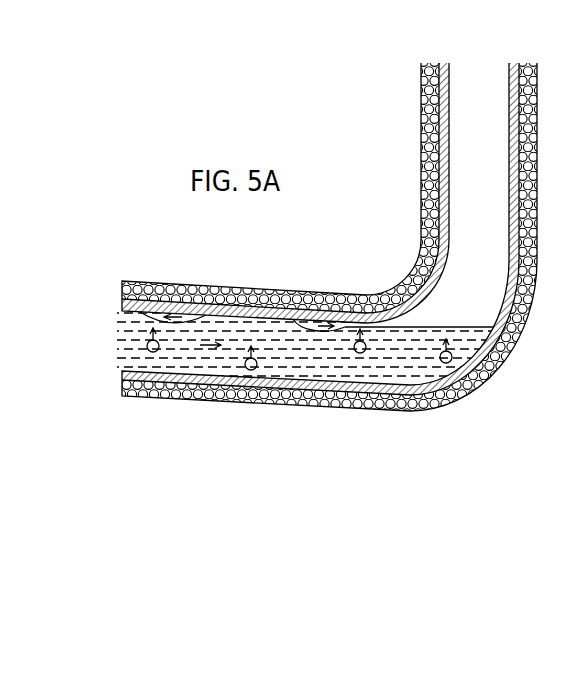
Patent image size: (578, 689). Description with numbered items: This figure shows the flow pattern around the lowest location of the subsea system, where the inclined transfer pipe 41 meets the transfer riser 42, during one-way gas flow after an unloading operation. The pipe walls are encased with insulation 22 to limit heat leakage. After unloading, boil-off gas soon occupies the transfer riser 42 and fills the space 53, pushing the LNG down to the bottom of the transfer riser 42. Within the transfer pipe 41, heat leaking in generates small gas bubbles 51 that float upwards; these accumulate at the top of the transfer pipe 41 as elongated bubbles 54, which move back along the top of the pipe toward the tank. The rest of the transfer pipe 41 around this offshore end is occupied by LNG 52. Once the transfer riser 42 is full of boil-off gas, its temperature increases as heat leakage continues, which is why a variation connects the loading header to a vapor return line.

The insulation 22 is at (430, 116).
The transfer pipe 41 is at (280, 311).
The transfer riser 42 is at (511, 100).
The small gas bubbles 51 is at (449, 352).
The LNG 52 is at (322, 365).
The space 53 is at (491, 162).
The elongated bubbles 54 is at (163, 298).